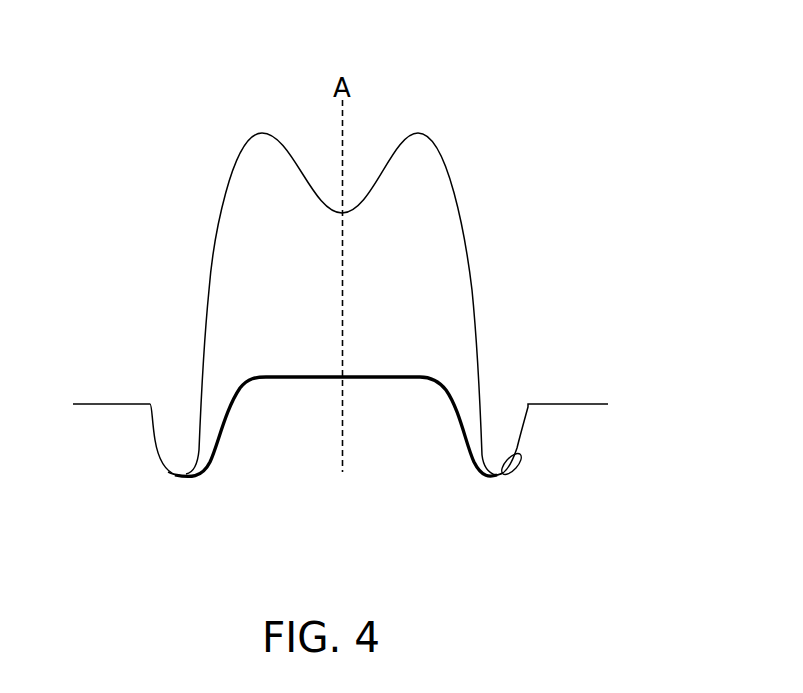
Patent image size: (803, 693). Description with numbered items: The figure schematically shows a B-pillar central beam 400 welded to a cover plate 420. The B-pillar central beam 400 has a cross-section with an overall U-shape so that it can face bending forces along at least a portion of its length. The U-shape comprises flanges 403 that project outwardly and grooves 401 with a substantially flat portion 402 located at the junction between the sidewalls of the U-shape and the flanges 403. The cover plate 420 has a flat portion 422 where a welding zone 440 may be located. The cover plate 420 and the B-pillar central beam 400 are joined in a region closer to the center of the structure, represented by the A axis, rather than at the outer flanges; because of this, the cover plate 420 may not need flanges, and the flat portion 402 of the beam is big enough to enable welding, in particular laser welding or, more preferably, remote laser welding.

The B-pillar central beam 400 is at (431, 101).
The grooves 401 is at (502, 408).
The substantially flat portion 402 is at (516, 457).
The flanges 403 is at (109, 402).
The cover plate 420 is at (224, 510).
The flat portion 422 is at (497, 478).
The welding zone 440 is at (175, 474).